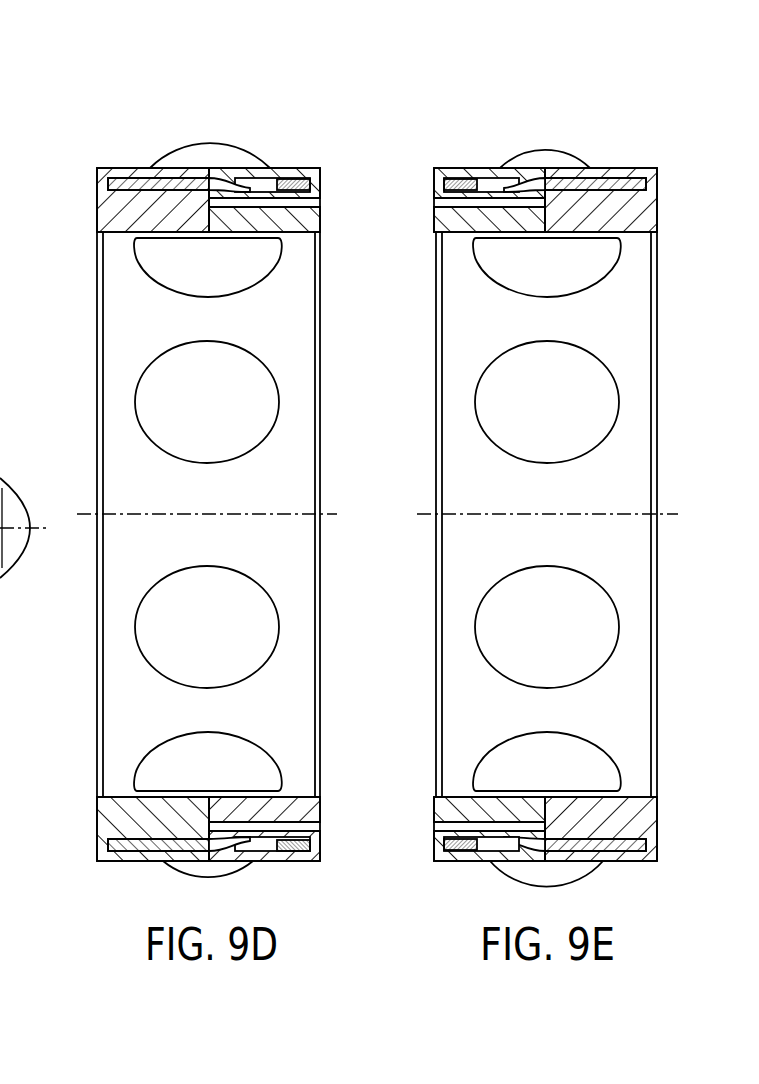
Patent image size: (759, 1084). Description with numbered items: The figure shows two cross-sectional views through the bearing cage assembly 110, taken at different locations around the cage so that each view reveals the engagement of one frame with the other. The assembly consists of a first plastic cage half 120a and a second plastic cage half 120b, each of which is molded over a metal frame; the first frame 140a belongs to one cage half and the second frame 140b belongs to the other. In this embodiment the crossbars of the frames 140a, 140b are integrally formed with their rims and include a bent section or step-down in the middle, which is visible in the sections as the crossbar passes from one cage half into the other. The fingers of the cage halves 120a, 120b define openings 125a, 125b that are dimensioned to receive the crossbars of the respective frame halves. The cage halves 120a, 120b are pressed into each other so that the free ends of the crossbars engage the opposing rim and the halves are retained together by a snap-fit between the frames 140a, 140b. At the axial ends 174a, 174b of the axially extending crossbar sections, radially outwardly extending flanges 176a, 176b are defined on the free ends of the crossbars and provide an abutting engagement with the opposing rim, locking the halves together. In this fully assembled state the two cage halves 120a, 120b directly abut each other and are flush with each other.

In FIG. 9D, the bearing cage assembly 110 is at (231, 128).
In FIG. 9E, the bearing cage assembly 110 is at (570, 130).
In FIG. 9D, the first plastic cage half 120a is at (90, 195).
In FIG. 9E, the first plastic cage half 120a is at (441, 877).
In FIG. 9D, the second plastic cage half 120b is at (305, 201).
In FIG. 9E, the second plastic cage half 120b is at (665, 812).
In FIG. 9E, the opening 125a is at (436, 226).
In FIG. 9D, the opening 125b is at (318, 232).
In FIG. 9D, the first frame 140a is at (133, 168).
In FIG. 9E, the first frame 140a is at (472, 168).
In FIG. 9D, the second frame 140b is at (287, 168).
In FIG. 9E, the second frame 140b is at (657, 168).
In FIG. 9D, the axial end of crossbar 174a is at (313, 193).
In FIG. 9E, the axial end of crossbar 174b is at (440, 838).
In FIG. 9D, the radially outwardly extending flange 176a is at (318, 184).
In FIG. 9E, the radially outwardly extending flange 176b is at (443, 853).